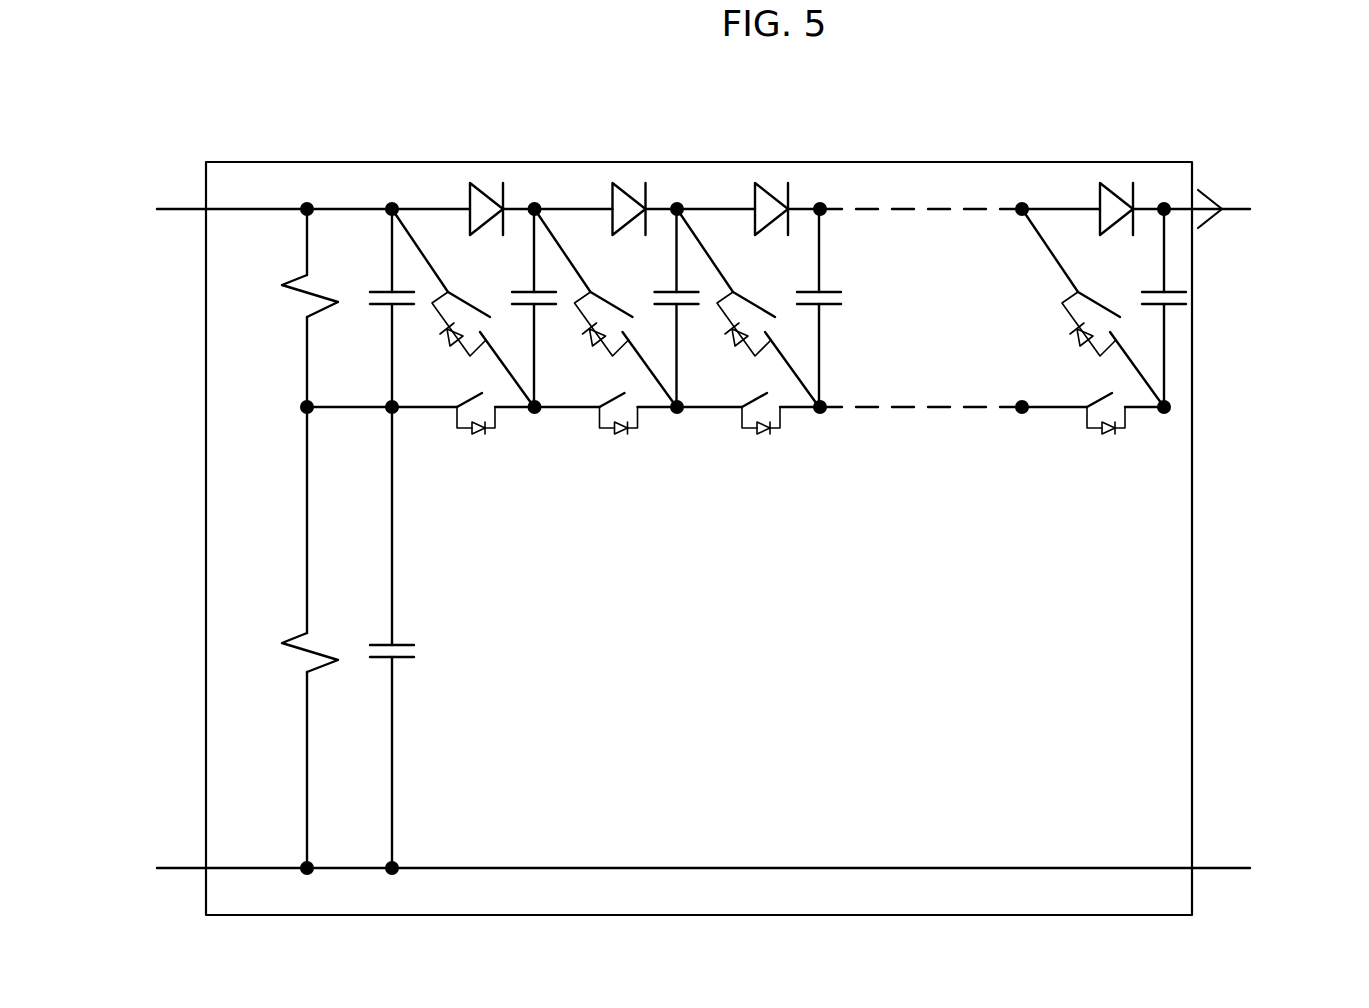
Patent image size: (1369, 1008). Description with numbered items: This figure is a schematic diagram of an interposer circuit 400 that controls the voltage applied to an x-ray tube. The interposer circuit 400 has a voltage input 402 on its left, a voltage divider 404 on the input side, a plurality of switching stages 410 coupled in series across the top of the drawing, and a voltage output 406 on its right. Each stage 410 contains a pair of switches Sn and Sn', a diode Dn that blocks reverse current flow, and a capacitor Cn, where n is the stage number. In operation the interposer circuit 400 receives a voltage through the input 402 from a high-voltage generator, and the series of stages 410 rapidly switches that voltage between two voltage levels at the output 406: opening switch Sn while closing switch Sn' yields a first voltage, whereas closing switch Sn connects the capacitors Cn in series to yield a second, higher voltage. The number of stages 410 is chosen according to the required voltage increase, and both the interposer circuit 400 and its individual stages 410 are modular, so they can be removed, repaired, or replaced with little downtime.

The interposer circuit 400 is at (927, 162).
The voltage input 402 is at (140, 868).
The voltage divider 404 is at (293, 277).
The voltage output 406 is at (1270, 868).
The switching stage 410 is at (789, 281).